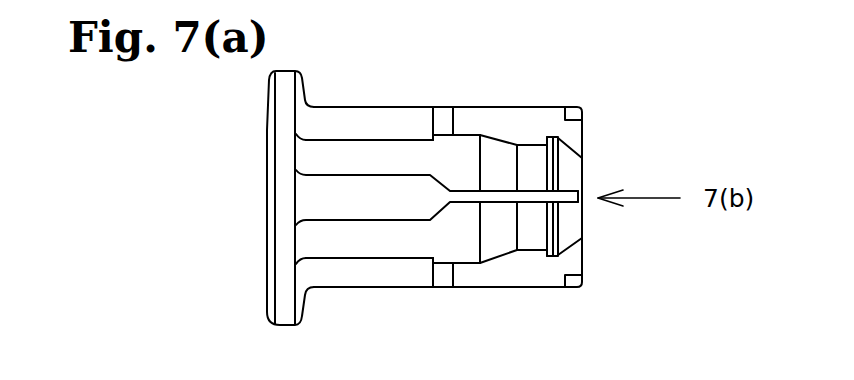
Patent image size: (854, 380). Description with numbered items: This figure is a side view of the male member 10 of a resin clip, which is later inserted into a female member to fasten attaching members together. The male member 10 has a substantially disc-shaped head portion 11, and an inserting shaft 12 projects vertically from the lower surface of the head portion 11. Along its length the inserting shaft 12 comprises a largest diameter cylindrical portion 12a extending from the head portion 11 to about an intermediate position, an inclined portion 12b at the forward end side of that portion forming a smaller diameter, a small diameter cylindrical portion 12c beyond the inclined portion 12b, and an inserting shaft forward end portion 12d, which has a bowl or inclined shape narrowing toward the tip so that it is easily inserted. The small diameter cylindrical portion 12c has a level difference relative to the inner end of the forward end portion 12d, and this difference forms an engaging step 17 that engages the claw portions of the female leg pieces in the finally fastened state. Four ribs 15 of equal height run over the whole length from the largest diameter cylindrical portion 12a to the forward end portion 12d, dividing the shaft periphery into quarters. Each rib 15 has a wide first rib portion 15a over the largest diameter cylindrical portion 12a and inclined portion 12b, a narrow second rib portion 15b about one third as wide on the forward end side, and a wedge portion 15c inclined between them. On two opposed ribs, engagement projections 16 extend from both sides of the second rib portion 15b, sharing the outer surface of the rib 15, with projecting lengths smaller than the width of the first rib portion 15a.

The male member 10 is at (258, 150).
The head portion 11 is at (267, 281).
The inserting shaft 12 is at (423, 287).
The largest diameter cylindrical portion 12a is at (368, 243).
The inclined portion 12b is at (500, 242).
The small diameter cylindrical portion 12c is at (530, 240).
The inserting shaft forward end portion 12d is at (572, 230).
The rib 15 is at (213, 245).
The first rib portion 15a is at (323, 187).
The second rib portion 15b is at (510, 125).
The wedge portion 15c is at (440, 123).
The engagement projection 16 is at (582, 114).
The engaging step 17 is at (537, 142).